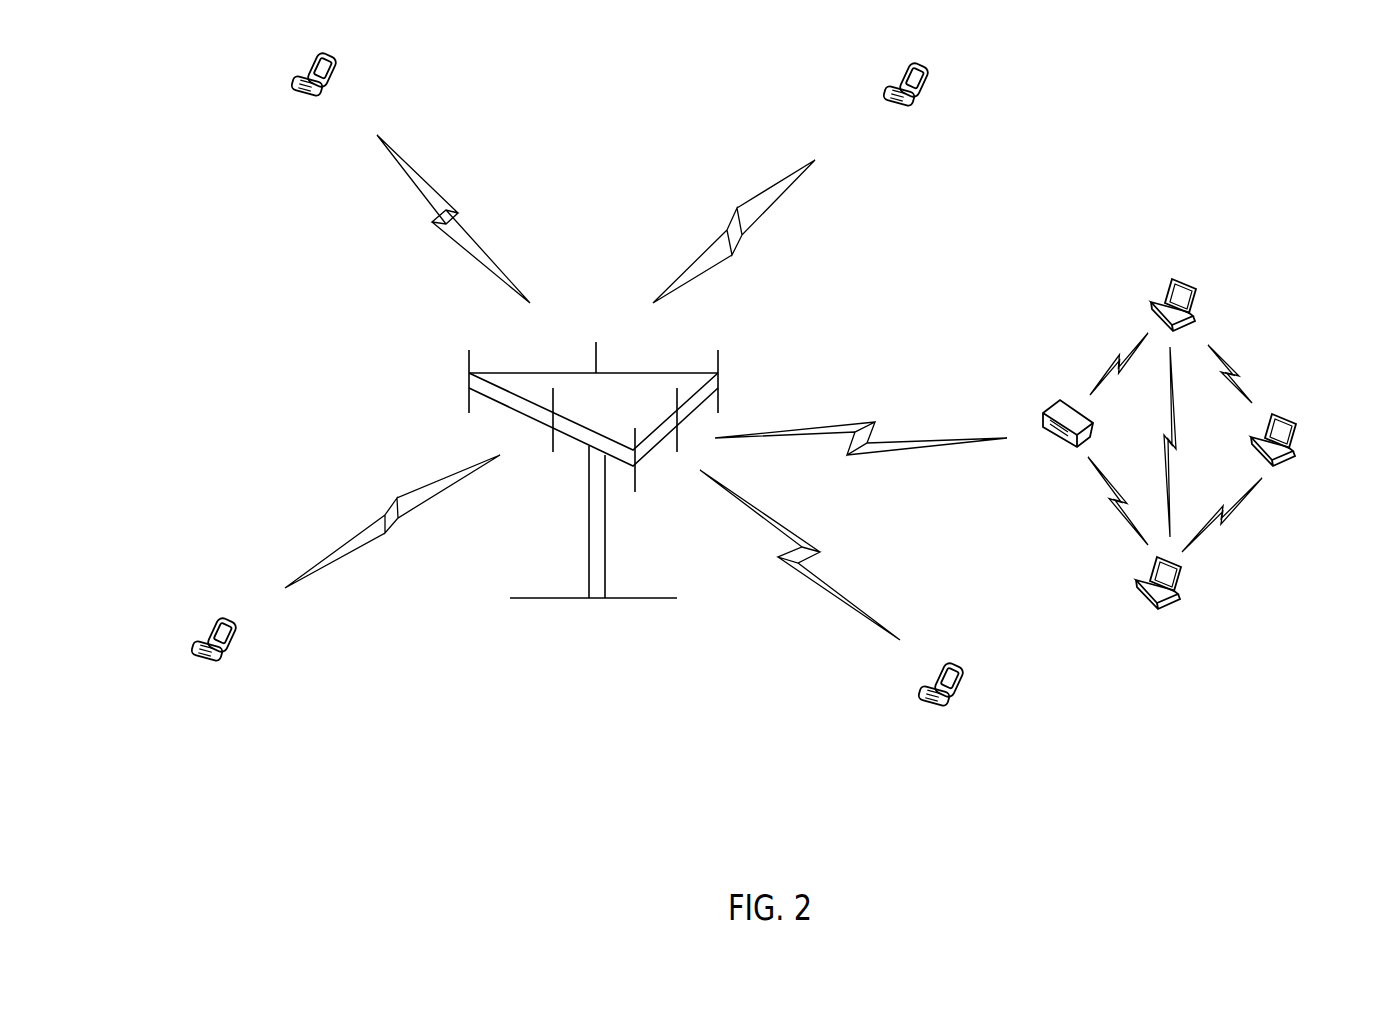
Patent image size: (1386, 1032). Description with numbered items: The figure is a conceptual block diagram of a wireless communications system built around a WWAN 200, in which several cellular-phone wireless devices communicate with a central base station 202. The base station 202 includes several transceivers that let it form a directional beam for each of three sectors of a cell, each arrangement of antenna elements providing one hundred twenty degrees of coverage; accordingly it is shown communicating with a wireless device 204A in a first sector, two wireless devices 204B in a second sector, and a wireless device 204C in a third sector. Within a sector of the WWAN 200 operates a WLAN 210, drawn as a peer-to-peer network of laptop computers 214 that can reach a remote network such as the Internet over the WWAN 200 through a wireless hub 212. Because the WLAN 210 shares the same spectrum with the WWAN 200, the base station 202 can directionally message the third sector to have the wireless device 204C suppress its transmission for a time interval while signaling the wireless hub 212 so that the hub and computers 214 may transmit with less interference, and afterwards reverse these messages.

The WWAN 200 is at (582, 83).
The base station 202 is at (606, 535).
The wireless device 204A is at (236, 648).
The wireless devices 204B is at (332, 80).
The wireless device 204C is at (958, 686).
The WLAN 210 is at (1270, 338).
The wireless hub 212 is at (1039, 412).
The computers 214 is at (1152, 301).